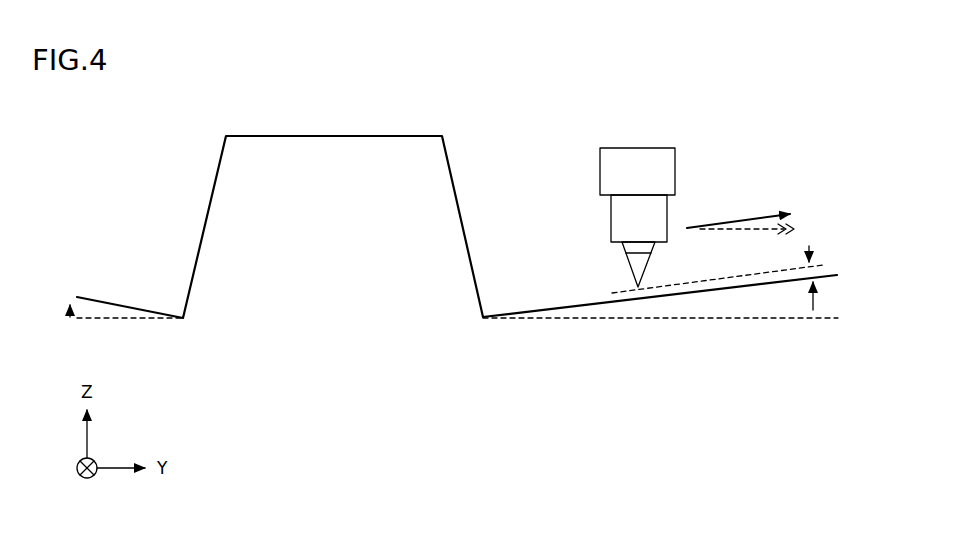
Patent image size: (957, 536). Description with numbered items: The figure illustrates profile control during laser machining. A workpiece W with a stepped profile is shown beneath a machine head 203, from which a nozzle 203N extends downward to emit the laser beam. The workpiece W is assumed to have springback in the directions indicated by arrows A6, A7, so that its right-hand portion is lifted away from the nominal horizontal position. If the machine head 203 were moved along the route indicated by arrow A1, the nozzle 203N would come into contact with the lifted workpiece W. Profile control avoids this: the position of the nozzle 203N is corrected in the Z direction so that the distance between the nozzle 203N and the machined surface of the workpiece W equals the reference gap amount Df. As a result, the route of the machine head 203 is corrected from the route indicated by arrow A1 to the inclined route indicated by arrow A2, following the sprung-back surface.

The workpiece W is at (391, 122).
The machine head 203 is at (586, 177).
The nozzle 203N is at (629, 266).
The arrow A1 is at (717, 237).
The arrow A2 is at (747, 214).
The arrow A6 is at (845, 286).
The arrow A7 is at (70, 319).
The reference gap amount Df is at (812, 268).